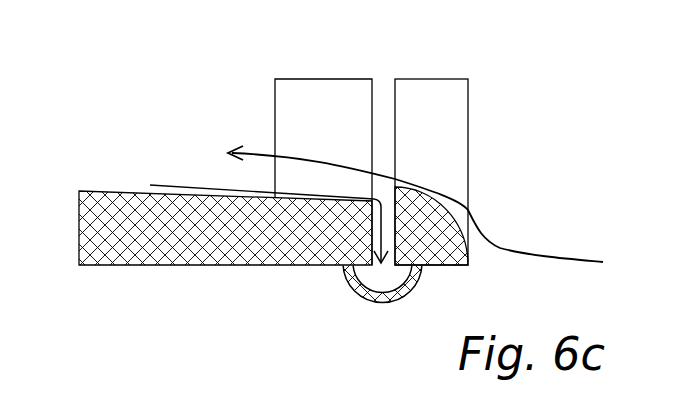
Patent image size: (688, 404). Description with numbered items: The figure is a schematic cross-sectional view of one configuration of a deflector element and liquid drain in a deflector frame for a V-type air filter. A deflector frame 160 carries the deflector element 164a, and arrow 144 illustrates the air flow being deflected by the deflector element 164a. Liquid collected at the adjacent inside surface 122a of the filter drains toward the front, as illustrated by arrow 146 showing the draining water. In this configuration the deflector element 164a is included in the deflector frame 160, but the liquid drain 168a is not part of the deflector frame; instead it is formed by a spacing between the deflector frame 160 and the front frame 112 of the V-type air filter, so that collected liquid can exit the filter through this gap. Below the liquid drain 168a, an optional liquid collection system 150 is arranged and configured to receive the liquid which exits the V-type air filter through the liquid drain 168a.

The front frame 112 is at (303, 79).
The deflector frame 160 is at (419, 79).
The inside surface 122a is at (117, 191).
The arrow illustrating draining water 146 is at (216, 188).
The deflector element 164a is at (405, 188).
The arrow illustrating deflected air flow 144 is at (557, 256).
The liquid drain 168a is at (376, 237).
The liquid collection system 150 is at (372, 303).